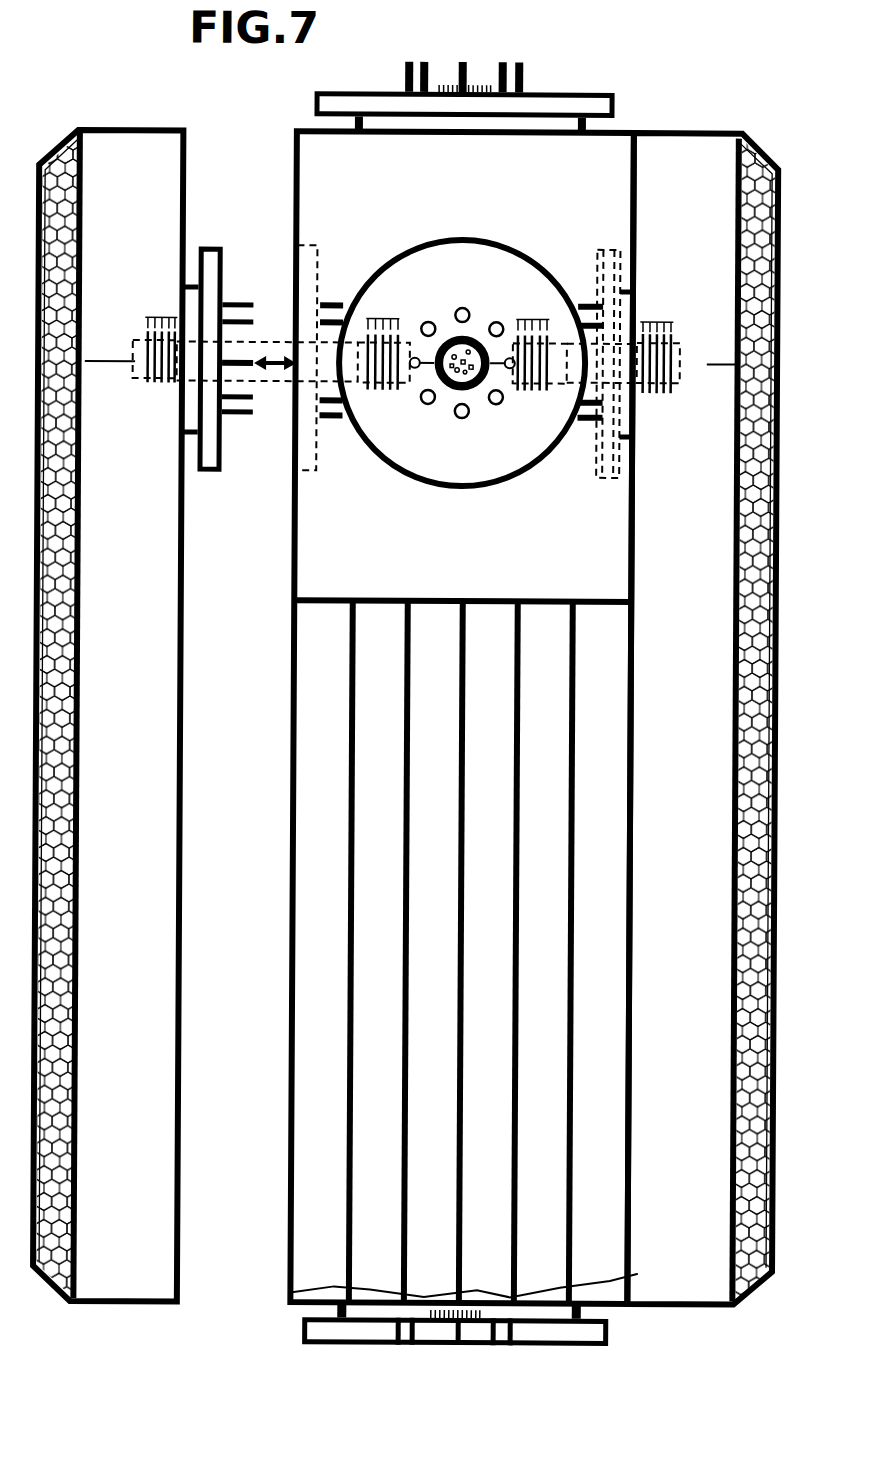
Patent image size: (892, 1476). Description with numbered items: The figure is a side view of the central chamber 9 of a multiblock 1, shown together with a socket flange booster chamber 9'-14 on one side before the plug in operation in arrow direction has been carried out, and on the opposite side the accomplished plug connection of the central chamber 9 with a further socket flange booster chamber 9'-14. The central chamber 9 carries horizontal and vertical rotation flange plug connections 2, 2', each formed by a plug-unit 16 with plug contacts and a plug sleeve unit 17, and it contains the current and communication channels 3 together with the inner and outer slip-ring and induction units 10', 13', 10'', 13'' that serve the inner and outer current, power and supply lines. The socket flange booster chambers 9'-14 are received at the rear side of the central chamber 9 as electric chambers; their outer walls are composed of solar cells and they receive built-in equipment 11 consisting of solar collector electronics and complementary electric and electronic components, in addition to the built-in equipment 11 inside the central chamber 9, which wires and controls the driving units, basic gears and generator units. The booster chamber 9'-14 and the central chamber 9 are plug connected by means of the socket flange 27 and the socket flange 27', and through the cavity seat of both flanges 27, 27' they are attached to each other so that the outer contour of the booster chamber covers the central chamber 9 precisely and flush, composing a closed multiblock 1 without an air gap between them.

The multiblock 1 is at (345, 734).
The rotation flange plug connection 2 is at (427, 723).
The rotation flange plug connection 2' is at (511, 686).
The current and communication channels 3 is at (398, 322).
The central chamber 9 is at (461, 75).
The socket flange booster chamber 9'-14 is at (399, 679).
The inner slip-ring and induction unit 10' is at (222, 394).
The inner slip-ring and induction unit 13' is at (222, 394).
The outer slip-ring and induction unit 10'' is at (132, 267).
The outer slip-ring and induction unit 13'' is at (132, 267).
The built-in equipment 11 is at (405, 718).
The plug-unit 16 is at (410, 290).
The plug sleeve unit 17 is at (425, 760).
The socket flange 27 is at (407, 347).
The socket flange 27' is at (434, 393).